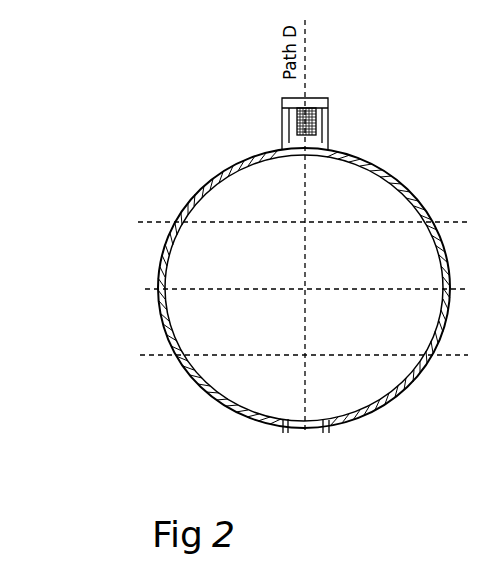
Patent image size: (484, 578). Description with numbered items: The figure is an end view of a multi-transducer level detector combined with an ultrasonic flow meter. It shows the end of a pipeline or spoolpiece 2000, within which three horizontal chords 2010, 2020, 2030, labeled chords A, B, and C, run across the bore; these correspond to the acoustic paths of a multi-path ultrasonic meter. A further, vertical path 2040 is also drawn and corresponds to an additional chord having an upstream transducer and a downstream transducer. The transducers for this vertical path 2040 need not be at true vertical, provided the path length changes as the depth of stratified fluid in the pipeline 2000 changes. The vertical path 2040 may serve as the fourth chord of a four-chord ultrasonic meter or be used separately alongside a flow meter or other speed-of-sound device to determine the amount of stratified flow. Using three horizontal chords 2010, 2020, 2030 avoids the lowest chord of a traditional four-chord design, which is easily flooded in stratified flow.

The pipeline or spoolpiece 2000 is at (358, 150).
The chord A 2010 is at (148, 222).
The chord B 2020 is at (145, 289).
The chord C 2030 is at (150, 355).
The path D 2040 is at (307, 183).